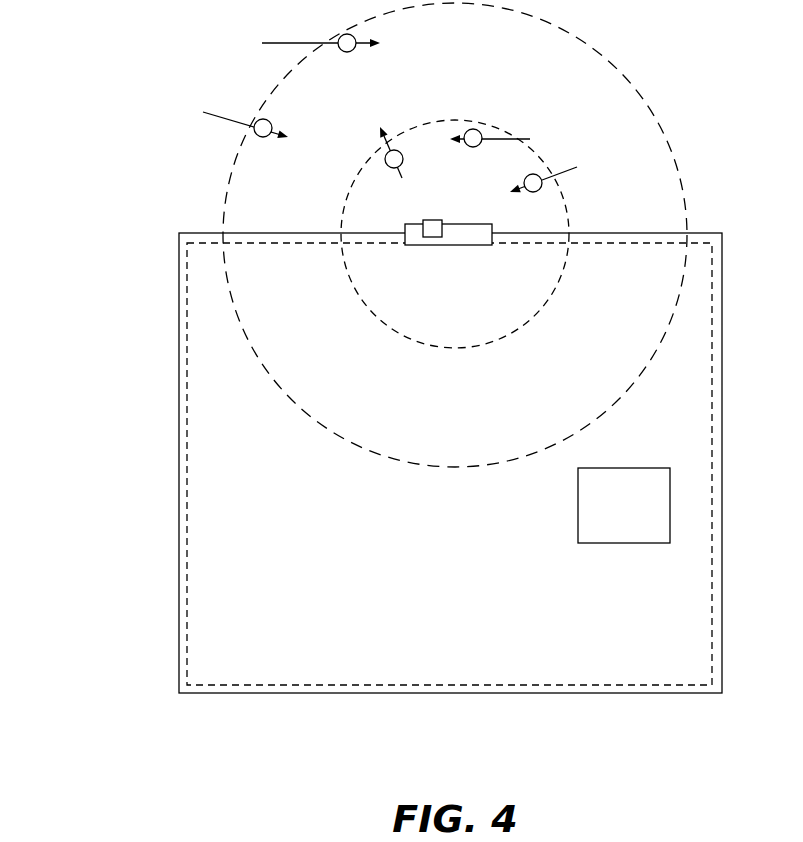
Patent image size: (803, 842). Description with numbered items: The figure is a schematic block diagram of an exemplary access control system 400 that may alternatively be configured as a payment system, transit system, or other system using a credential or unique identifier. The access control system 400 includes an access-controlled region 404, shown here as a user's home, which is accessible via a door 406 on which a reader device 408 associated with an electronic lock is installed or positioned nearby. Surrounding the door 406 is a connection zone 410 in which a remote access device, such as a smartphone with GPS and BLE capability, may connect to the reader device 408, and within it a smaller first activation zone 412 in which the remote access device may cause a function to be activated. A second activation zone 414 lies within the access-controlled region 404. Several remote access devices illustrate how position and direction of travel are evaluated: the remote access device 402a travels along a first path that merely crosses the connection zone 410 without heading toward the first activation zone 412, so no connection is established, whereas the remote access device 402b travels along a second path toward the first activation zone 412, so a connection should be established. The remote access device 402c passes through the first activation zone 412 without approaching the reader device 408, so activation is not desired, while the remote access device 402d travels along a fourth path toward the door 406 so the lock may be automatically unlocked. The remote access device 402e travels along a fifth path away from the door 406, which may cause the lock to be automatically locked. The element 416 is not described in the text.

The access control system 400 is at (103, 35).
The remote access device 402a is at (347, 52).
The remote access device 402b is at (263, 137).
The remote access device 402c is at (473, 129).
The remote access device 402d is at (540, 190).
The remote access device 402e is at (385, 160).
The access-controlled region 404 is at (178, 452).
The door 406 is at (474, 224).
The reader device 408 is at (428, 220).
The connection zone 410 is at (647, 103).
The first activation zone 412 is at (340, 222).
The second activation zone 414 is at (712, 358).
The controller 416 is at (624, 505).